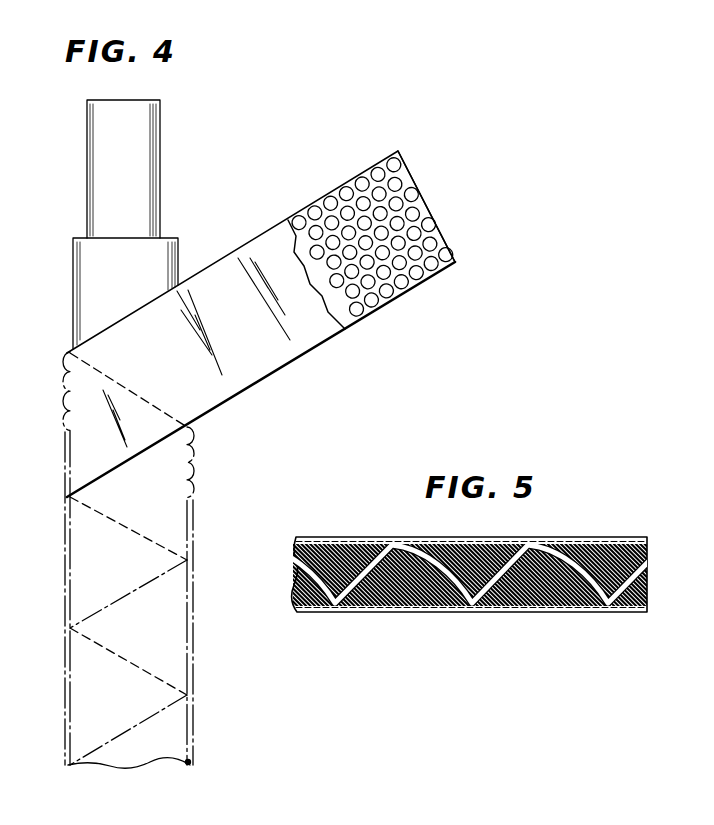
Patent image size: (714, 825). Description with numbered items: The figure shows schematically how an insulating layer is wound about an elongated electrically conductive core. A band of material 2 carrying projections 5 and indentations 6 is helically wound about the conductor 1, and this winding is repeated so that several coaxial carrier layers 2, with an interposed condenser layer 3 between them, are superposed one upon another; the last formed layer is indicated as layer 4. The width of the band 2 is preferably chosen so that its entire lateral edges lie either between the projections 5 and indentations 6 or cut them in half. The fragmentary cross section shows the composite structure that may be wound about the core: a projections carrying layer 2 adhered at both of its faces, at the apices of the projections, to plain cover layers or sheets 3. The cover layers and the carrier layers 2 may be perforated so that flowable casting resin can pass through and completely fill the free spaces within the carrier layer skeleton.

In FIG. 4, the conductor 1 is at (150, 160).
In FIG. 4, the band of projections and indentations carrying material 2 is at (255, 250).
In FIG. 5, the band of projections and indentations carrying material 2 is at (565, 613).
In FIG. 4, the condenser layer 3 is at (88, 280).
In FIG. 5, the condenser layer 3 is at (335, 542).
In FIG. 4, the last formed layer 4 is at (66, 594).
In FIG. 5, the last formed layer 4 is at (405, 613).
In FIG. 4, the projections 5 is at (345, 195).
In FIG. 4, the indentations 6 is at (422, 208).